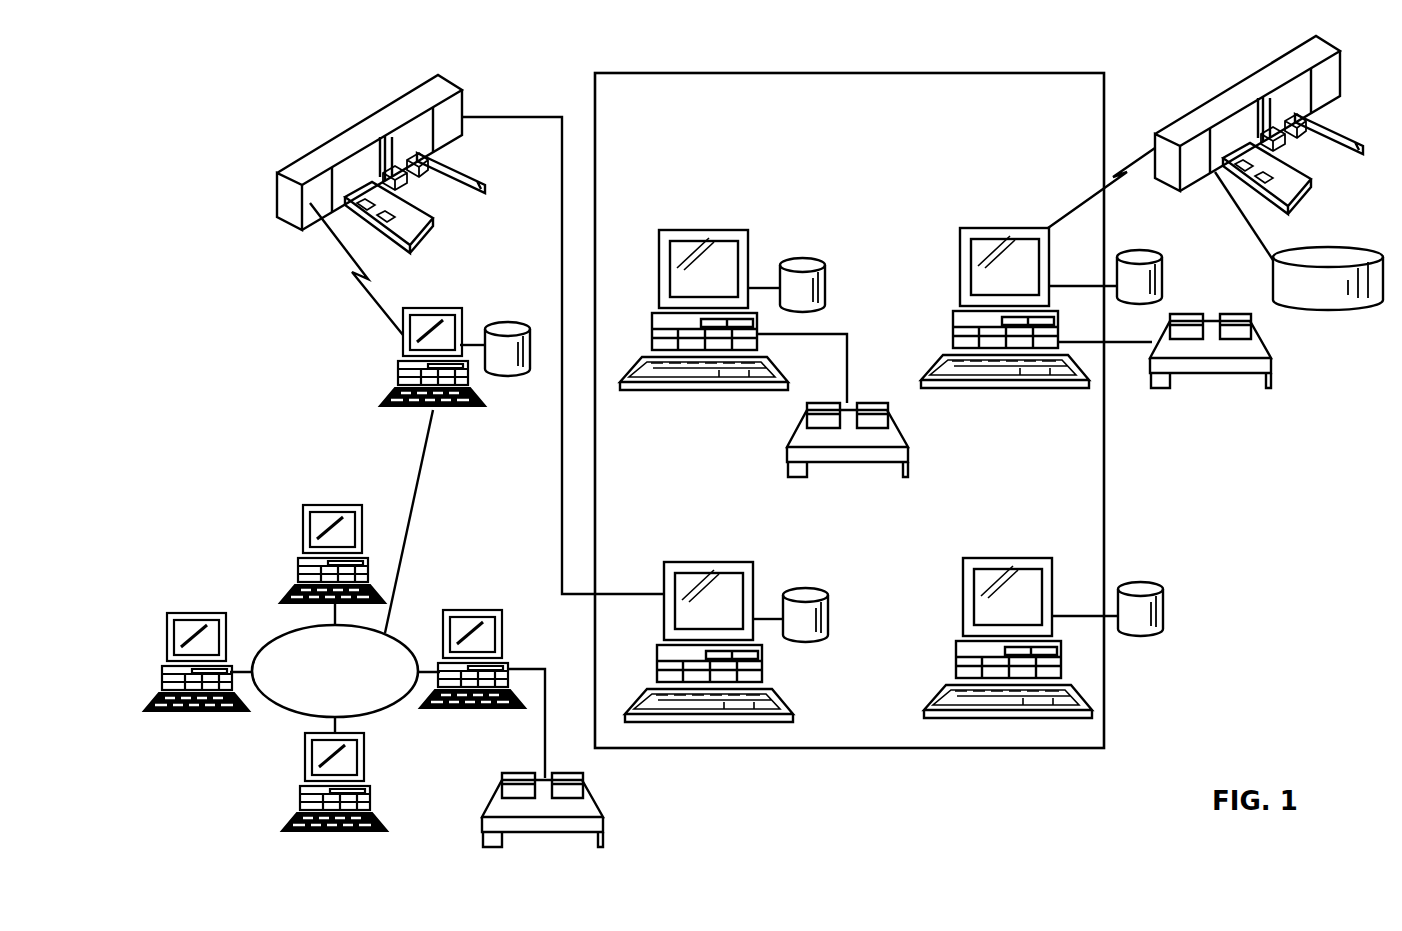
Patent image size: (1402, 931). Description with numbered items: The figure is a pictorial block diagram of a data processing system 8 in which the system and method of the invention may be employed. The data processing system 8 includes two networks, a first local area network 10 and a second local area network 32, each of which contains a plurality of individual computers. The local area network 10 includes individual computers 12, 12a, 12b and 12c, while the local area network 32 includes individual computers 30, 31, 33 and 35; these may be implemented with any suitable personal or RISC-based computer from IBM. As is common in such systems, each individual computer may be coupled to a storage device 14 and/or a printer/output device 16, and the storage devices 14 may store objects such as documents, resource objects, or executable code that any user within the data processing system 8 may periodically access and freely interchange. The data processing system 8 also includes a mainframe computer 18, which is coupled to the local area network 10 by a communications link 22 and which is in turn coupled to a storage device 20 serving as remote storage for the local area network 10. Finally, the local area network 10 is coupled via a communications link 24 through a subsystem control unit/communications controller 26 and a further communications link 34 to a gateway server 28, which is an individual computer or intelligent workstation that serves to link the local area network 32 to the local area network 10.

The data processing system 8 is at (587, 83).
The local area network 10 is at (731, 142).
The individual computer 12 is at (978, 228).
The individual computer 12a is at (678, 228).
The individual computer 12b is at (680, 560).
The individual computer 12c is at (982, 558).
The storage device 14 is at (832, 289).
The printer/output device 16 is at (890, 438).
The mainframe computer 18 is at (1173, 128).
The storage device 20 is at (1328, 300).
The communications link 22 is at (1128, 160).
The communications link 24 is at (562, 250).
The subsystem control unit/communications controller 26 is at (345, 138).
The gateway server 28 is at (445, 307).
The individual computer 30 is at (478, 610).
The individual computer 31 is at (365, 752).
The local area network 32 is at (293, 708).
The individual computer 33 is at (188, 612).
The communications link 34 is at (372, 305).
The individual computer 35 is at (302, 530).